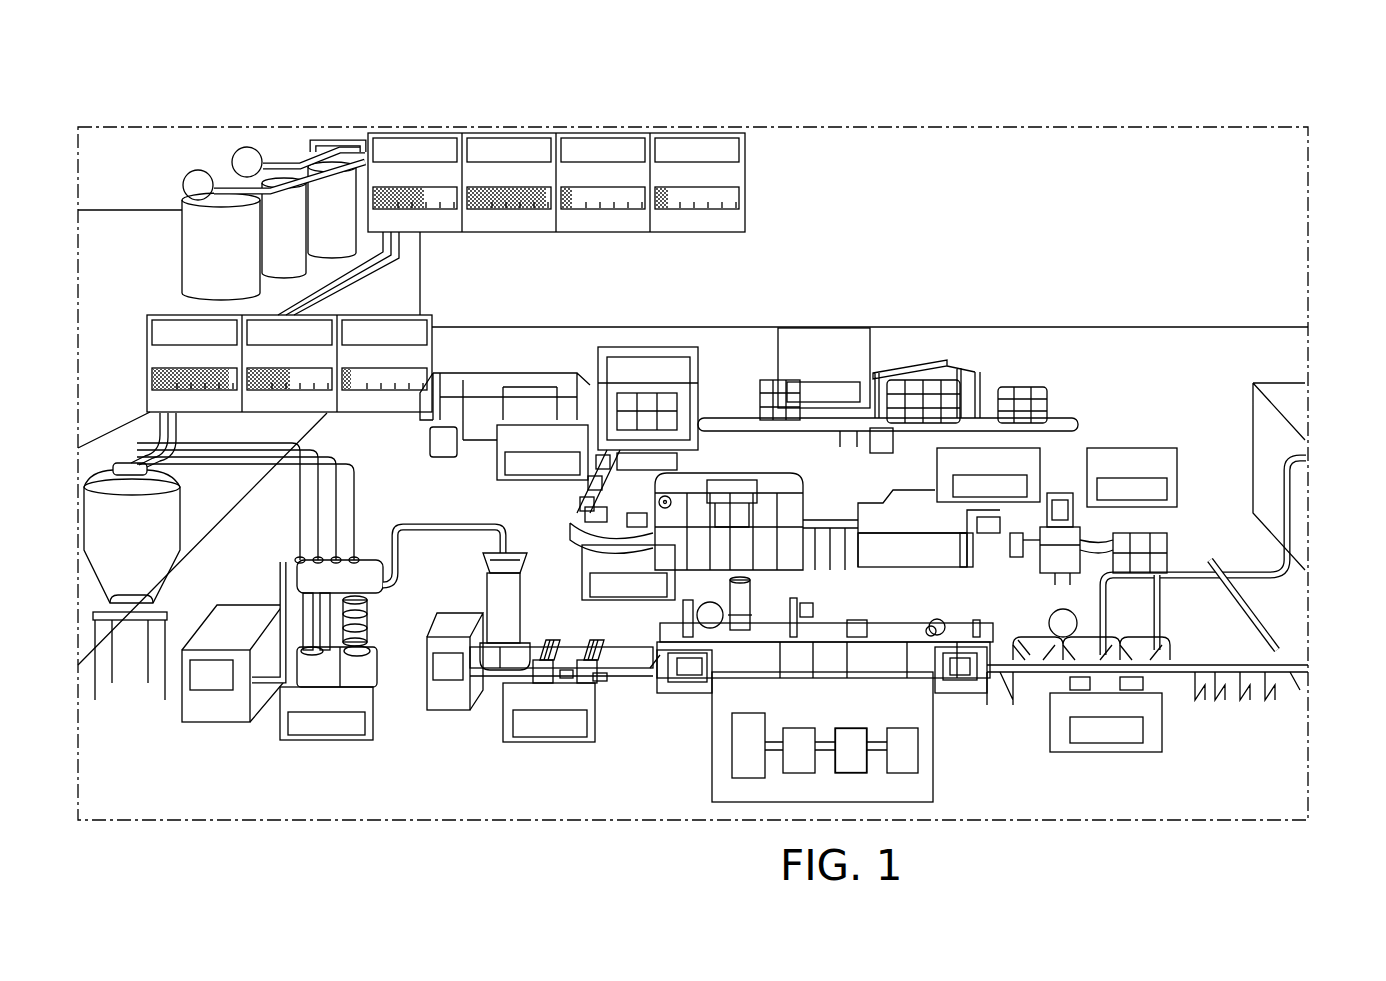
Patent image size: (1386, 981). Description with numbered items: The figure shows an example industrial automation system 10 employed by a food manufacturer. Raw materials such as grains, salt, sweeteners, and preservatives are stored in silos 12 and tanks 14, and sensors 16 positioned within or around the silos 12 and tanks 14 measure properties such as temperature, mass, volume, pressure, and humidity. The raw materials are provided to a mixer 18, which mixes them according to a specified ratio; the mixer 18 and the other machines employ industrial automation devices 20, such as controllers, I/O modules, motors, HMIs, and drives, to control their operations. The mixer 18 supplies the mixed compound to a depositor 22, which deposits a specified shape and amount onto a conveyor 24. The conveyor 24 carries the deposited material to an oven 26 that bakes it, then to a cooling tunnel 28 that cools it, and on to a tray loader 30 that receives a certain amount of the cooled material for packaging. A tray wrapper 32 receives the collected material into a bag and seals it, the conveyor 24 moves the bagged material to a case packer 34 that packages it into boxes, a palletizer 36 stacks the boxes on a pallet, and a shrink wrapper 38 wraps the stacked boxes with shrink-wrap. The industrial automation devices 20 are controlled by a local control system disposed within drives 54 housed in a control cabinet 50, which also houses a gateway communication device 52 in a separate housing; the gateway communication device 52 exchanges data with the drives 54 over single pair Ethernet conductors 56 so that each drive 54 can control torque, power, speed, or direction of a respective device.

The industrial automation system 10 is at (822, 103).
The silos 12 is at (297, 150).
The tanks 14 is at (145, 367).
The sensors 16 is at (233, 150).
The mixer 18 is at (377, 697).
The industrial automation devices 20 is at (1062, 470).
The depositor 22 is at (602, 687).
The conveyor 24 is at (837, 507).
The oven 26 is at (900, 615).
The cooling tunnel 28 is at (1153, 667).
The tray loader 30 is at (1180, 477).
The tray wrapper 32 is at (933, 467).
The case packer 34 is at (577, 570).
The palletizer 36 is at (487, 468).
The shrink wrapper 38 is at (878, 347).
The control cabinet 50 is at (933, 777).
The gateway communication device 52 is at (732, 773).
The drives 54 is at (778, 723).
The single pair Ethernet (SPE) conductors 56 is at (877, 750).